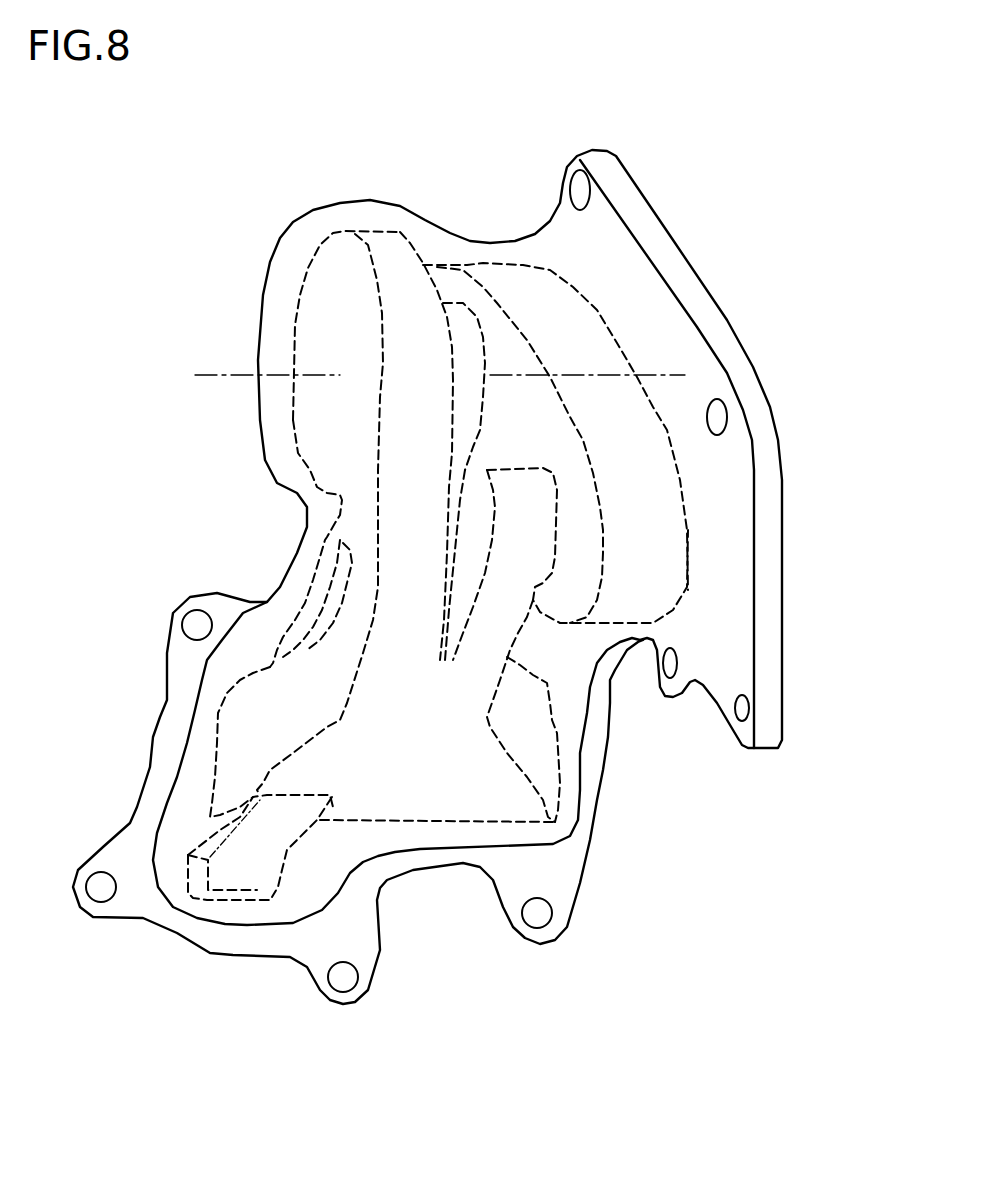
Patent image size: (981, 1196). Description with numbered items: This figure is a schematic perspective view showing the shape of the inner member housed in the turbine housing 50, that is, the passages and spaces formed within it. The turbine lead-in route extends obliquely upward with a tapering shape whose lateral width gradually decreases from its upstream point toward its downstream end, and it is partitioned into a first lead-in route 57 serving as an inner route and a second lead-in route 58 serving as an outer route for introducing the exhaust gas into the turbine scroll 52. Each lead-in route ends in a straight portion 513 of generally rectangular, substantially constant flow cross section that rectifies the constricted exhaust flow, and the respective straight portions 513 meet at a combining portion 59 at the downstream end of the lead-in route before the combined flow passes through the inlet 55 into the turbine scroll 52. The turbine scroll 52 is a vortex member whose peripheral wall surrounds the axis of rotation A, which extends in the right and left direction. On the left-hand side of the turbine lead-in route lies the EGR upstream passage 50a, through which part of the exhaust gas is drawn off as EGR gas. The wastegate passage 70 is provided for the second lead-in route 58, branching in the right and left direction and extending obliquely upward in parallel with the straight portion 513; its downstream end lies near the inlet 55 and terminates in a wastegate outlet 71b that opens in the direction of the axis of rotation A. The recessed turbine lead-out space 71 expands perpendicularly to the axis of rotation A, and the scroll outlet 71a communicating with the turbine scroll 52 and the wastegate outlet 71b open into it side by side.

The turbine housing 50 is at (427, 547).
The EGR upstream passage 50a is at (260, 908).
The turbine scroll 52 is at (303, 513).
The inlet of the turbine scroll 55 is at (515, 446).
The first lead-in route 57 is at (198, 694).
The second lead-in route 58 is at (413, 883).
The combining portion 59 is at (268, 543).
The straight portion 513 is at (288, 585).
The wastegate passage 70 is at (585, 711).
The turbine lead-out space 71 is at (588, 432).
The scroll outlet 71a is at (487, 332).
The wastegate outlet 71b is at (674, 545).
The axis of rotation A is at (439, 414).